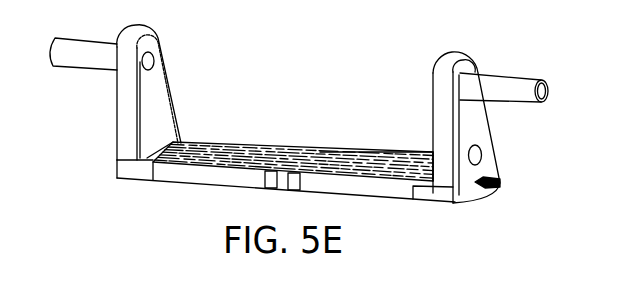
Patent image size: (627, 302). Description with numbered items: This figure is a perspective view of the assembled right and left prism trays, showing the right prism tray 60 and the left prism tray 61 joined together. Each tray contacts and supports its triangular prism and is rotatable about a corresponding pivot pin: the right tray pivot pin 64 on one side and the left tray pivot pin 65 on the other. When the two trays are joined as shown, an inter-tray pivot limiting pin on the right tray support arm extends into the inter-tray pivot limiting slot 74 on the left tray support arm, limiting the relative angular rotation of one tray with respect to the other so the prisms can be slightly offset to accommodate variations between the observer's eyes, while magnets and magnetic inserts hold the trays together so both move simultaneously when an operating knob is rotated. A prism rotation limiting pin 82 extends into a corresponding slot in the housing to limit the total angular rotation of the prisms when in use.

The inter-tray pivot limiting slot 74 is at (308, 103).
The right prism tray 60 is at (255, 147).
The left prism tray 61 is at (370, 153).
The right tray pivot pin 64 is at (87, 55).
The left tray pivot pin 65 is at (511, 93).
The prism rotation limiting pin 82 is at (487, 187).